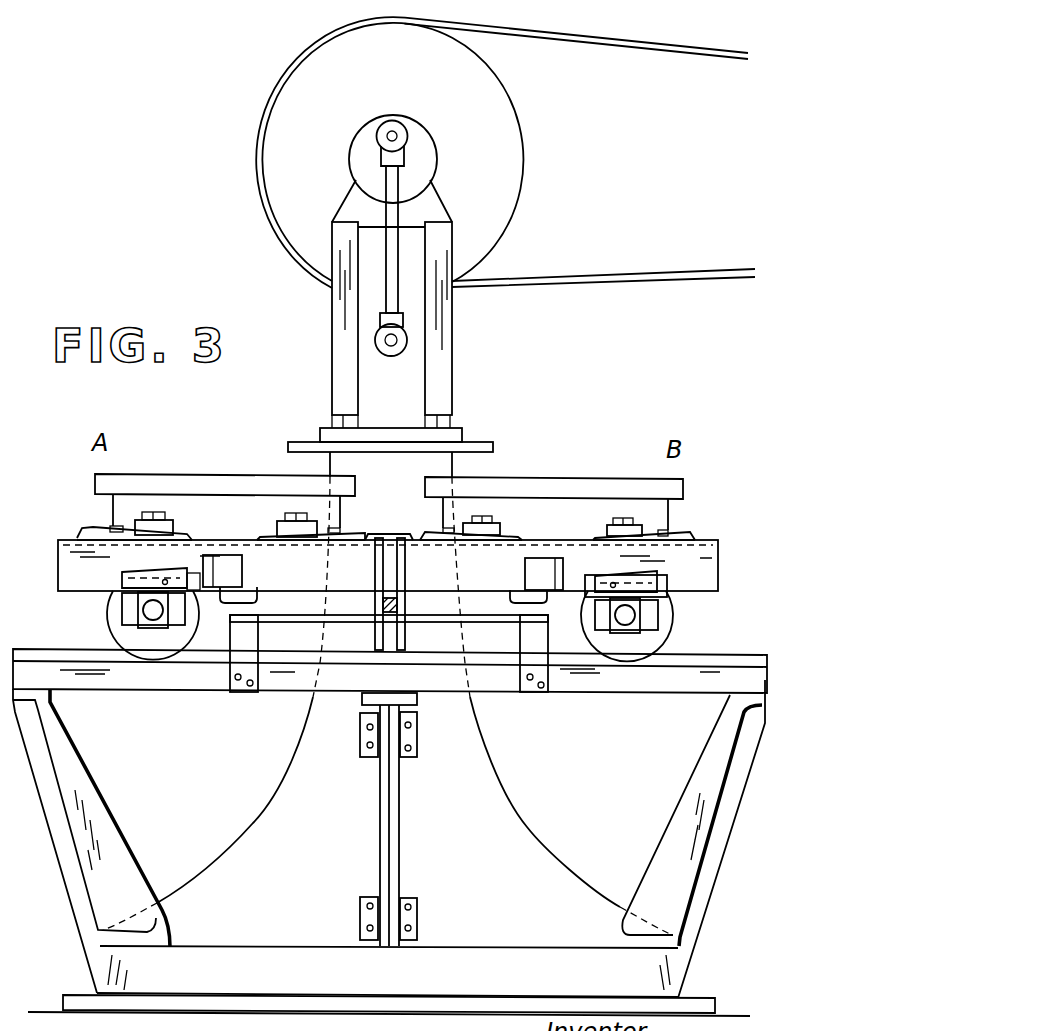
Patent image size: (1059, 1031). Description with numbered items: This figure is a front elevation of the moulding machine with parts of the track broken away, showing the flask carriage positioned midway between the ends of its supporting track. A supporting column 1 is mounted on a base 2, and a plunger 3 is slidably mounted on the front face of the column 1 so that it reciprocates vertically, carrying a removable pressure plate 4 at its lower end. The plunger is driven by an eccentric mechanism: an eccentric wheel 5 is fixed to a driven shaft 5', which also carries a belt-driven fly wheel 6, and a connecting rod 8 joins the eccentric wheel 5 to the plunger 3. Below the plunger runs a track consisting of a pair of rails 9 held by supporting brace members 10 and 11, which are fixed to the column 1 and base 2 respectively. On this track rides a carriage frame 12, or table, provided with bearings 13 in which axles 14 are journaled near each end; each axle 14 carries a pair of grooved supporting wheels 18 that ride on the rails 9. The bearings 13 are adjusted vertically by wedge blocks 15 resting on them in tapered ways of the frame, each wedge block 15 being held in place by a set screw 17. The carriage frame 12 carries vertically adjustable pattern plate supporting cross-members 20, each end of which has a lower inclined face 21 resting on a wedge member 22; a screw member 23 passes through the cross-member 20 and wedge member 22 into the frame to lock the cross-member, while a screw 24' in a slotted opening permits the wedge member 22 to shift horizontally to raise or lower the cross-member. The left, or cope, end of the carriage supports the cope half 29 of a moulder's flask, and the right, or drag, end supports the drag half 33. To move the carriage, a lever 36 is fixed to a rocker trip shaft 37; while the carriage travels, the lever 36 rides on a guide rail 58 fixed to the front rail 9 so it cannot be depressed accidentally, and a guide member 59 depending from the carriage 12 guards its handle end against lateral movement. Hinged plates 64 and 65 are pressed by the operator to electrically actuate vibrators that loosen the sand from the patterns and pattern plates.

The supporting column 1 is at (386, 693).
The base 2 is at (389, 981).
The plunger 3 is at (391, 311).
The pressure plate 4 is at (480, 448).
The eccentric wheel 5 is at (407, 159).
The shaft 5' is at (427, 152).
The fly wheel 6 is at (505, 152).
The connecting rod 8 is at (390, 290).
The rails 9 is at (390, 671).
The supporting brace member 10 is at (400, 813).
The supporting brace member 11 is at (105, 806).
The carriage frame 12 is at (388, 565).
The bearings 13 is at (142, 598).
The axles 14 is at (148, 612).
The wedge blocks 15 is at (122, 581).
The set screw 17 is at (166, 580).
The supporting wheels 18 is at (390, 626).
The pattern plate supporting cross-members 20 is at (273, 527).
The inclined face 21 is at (129, 528).
The wedge member 22 is at (90, 530).
The screw member 23 is at (155, 517).
The screw 24' is at (394, 511).
The cope half of moulder's flask 29 is at (217, 482).
The drag half of moulder's flask 33 is at (552, 505).
The lever 36 is at (398, 605).
The rocker trip shaft 37 is at (390, 532).
The guide rail 58 is at (493, 617).
The guide member 59 is at (383, 633).
The hinged plate 64 is at (227, 573).
The hinged plate 65 is at (537, 575).